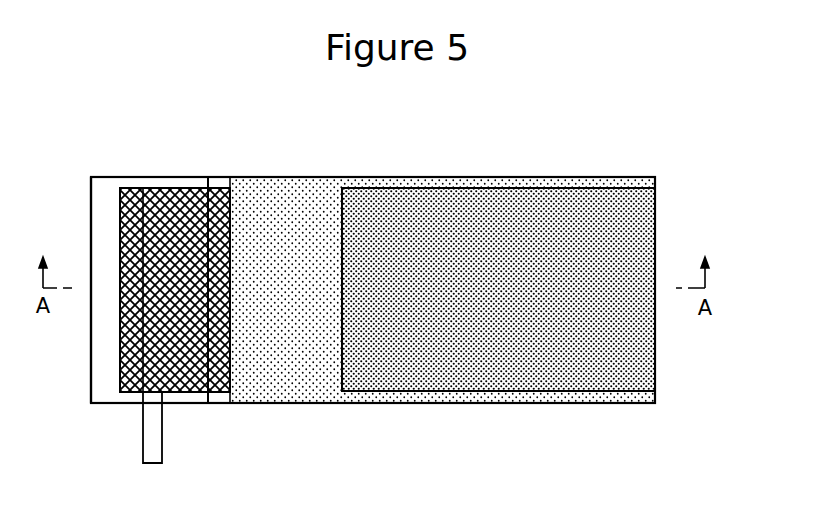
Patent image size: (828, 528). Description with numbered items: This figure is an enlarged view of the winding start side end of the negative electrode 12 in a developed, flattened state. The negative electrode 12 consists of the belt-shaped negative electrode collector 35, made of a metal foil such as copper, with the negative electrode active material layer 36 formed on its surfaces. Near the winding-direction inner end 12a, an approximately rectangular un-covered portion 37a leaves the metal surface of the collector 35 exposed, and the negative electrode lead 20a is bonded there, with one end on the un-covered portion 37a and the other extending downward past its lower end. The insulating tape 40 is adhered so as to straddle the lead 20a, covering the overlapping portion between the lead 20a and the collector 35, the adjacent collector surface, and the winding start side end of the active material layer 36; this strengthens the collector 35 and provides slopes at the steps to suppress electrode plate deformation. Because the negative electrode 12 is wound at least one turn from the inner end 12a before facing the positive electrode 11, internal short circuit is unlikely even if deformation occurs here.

The positive electrode 11 is at (635, 229).
The negative electrode 12 is at (362, 176).
The winding-direction inner end 12a is at (91, 217).
The negative electrode lead 20a is at (154, 448).
The negative electrode collector 35 is at (112, 177).
The negative electrode active material layer 36 is at (285, 218).
The un-covered portion 37a is at (140, 187).
The insulating tape 40 is at (190, 188).